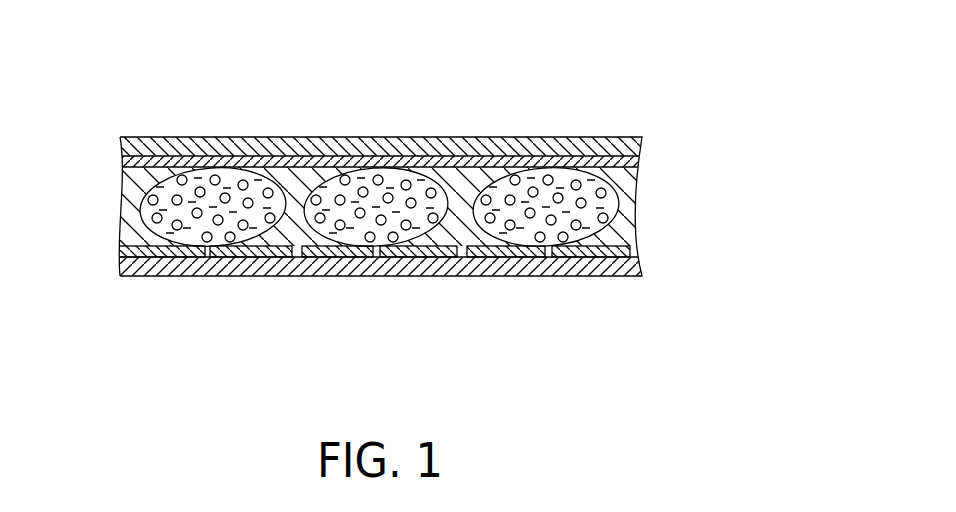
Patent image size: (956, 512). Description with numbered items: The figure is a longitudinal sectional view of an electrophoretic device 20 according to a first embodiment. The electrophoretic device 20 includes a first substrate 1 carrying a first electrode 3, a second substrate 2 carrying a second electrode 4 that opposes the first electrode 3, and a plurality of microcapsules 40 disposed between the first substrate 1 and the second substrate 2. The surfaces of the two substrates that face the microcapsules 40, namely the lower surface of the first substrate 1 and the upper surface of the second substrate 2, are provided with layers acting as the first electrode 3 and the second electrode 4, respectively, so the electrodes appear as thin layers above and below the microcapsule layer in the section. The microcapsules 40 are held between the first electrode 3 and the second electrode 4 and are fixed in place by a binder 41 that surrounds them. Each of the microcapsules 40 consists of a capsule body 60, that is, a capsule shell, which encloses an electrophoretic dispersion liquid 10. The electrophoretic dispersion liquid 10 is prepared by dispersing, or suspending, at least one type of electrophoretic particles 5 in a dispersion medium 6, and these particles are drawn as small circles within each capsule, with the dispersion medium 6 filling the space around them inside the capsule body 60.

The electrophoretic device 20 is at (582, 117).
The first substrate 1 is at (528, 149).
The first electrode 3 is at (408, 166).
The second substrate 2 is at (432, 266).
The second electrode 4 is at (376, 253).
The microcapsules 40 is at (381, 240).
The binder 41 is at (130, 187).
The capsule body 60 is at (163, 240).
The electrophoretic dispersion liquid 10 is at (379, 268).
The electrophoretic particles 5 is at (178, 203).
The dispersion medium 6 is at (232, 230).